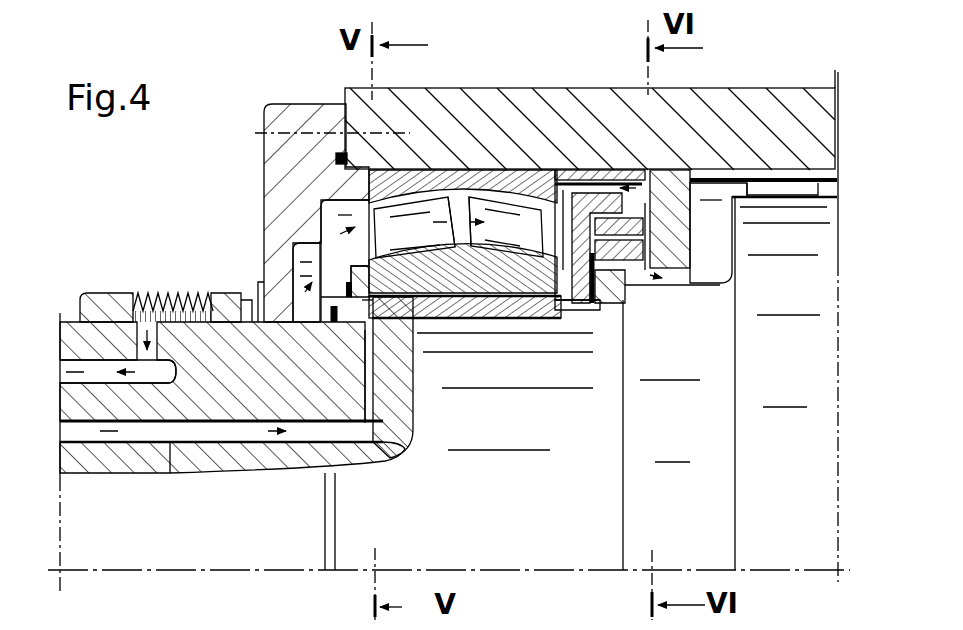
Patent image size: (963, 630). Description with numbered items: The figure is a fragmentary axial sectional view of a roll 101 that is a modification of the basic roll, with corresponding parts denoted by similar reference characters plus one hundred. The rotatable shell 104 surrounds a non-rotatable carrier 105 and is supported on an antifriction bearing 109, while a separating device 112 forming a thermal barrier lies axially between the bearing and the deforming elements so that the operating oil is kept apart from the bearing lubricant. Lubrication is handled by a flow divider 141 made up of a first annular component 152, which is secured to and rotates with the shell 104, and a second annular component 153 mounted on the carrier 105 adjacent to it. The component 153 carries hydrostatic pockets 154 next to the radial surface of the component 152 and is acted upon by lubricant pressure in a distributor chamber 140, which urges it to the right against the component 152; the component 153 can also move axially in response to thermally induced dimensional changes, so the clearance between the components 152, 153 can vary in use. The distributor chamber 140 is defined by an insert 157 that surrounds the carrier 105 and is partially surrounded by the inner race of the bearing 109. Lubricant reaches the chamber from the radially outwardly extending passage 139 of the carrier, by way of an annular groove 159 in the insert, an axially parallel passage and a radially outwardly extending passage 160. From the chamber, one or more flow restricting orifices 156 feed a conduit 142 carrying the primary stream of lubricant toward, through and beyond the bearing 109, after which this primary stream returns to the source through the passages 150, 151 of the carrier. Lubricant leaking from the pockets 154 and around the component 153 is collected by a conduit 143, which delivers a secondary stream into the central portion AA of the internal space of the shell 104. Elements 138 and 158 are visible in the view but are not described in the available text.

The roll 101 is at (281, 86).
The shell 104 is at (798, 112).
The carrier 105 is at (787, 547).
The antifriction bearing 109 is at (398, 232).
The separating device 112 is at (642, 138).
The lubricant channel 138 is at (171, 432).
The radially outwardly extending passage 139 is at (383, 433).
The distributor chamber 140 is at (591, 200).
The flow divider 141 is at (684, 428).
The conduit 142 is at (266, 198).
The conduit 143 is at (642, 274).
The passage 150 is at (142, 294).
The passage 151 is at (103, 372).
The first annular component 152 is at (663, 218).
The second annular component 153 is at (626, 292).
The hydrostatic pockets 154 is at (708, 288).
The flow restricting orifices 156 is at (575, 305).
The insert 157 is at (575, 292).
The sleeve 158 is at (388, 422).
The annular groove 159 is at (506, 320).
The radially outwardly extending passage 160 is at (594, 300).
The central portion of the internal space AA is at (705, 198).